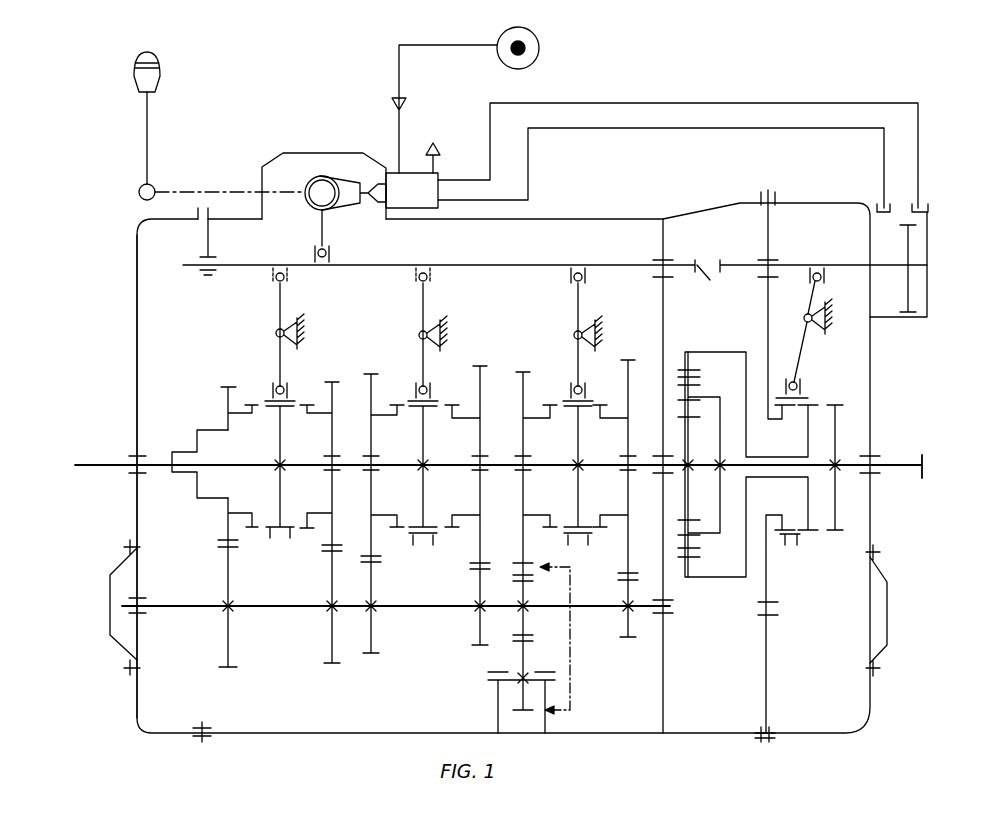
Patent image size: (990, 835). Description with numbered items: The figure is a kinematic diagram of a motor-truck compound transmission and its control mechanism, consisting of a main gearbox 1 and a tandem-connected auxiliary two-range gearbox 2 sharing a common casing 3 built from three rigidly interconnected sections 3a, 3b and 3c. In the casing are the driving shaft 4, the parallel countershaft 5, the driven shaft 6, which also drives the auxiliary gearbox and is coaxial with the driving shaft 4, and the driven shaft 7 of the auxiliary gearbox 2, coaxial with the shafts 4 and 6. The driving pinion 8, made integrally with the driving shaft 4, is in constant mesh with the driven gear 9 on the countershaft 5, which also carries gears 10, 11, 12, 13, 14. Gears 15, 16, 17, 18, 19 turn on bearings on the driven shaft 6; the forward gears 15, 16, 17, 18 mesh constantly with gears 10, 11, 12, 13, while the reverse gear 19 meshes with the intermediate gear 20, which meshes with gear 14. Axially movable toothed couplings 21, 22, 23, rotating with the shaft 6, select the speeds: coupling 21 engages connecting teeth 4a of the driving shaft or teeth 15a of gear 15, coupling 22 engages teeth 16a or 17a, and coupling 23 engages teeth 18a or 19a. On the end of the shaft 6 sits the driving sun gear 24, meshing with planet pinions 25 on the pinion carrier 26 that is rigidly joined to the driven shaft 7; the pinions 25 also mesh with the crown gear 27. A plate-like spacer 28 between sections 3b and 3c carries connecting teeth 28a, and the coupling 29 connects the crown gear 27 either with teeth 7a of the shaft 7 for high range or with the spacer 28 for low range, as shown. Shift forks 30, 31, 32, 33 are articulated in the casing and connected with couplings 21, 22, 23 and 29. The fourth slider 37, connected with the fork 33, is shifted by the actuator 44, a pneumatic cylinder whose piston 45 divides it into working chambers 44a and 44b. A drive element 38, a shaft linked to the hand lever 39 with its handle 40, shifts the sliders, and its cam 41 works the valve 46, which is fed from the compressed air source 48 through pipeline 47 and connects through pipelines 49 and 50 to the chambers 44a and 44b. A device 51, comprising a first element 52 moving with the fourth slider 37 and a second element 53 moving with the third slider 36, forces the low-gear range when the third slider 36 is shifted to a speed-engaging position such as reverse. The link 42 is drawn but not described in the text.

The main gearbox 1 is at (157, 312).
The auxiliary two-range gearbox 2 is at (838, 575).
The casing 3 is at (337, 736).
The casing section 3a is at (137, 704).
The casing section 3b is at (250, 734).
The casing section 3c is at (803, 737).
The driving shaft 4 is at (90, 466).
The connecting teeth 4a is at (238, 536).
The countershaft 5 is at (285, 608).
The driven shaft 6 is at (228, 468).
The driven shaft 7 is at (882, 468).
The connecting teeth 7a is at (838, 402).
The driving pinion 8 is at (226, 523).
The driven gear 9 is at (226, 627).
The gear 10 is at (329, 627).
The gear 11 is at (373, 632).
The gear 12 is at (478, 625).
The gear 13 is at (625, 618).
The gear 14 is at (524, 622).
The gear 15 is at (332, 379).
The connecting teeth 15a is at (312, 551).
The gear 16 is at (371, 374).
The connecting teeth 16a is at (389, 550).
The gear 17 is at (480, 364).
The connecting teeth 17a is at (459, 553).
The gear 18 is at (630, 358).
The connecting teeth 18a is at (613, 559).
The gear 19 is at (522, 366).
The connecting teeth 19a is at (540, 559).
The intermediate gear 20 is at (516, 695).
The gearshift toothed coupling 21 is at (272, 396).
The gearshift toothed coupling 22 is at (430, 392).
The gearshift toothed coupling 23 is at (568, 393).
The driving sun gear 24 is at (692, 437).
The planet pinions 25 is at (698, 376).
The pinion carrier 26 is at (718, 497).
The crown gear 27 is at (690, 362).
The spacer 28 is at (766, 320).
The connecting teeth 28a is at (791, 436).
The toothed gearshift coupling 29 is at (803, 388).
The shift fork 30 is at (279, 300).
The shift fork 31 is at (421, 302).
The shift fork 32 is at (580, 312).
The shift fork 33 is at (804, 352).
The third slider 36 is at (505, 265).
The fourth slider 37 is at (802, 266).
The drive element 38 is at (322, 176).
The hand lever 39 is at (149, 134).
The handle 40 is at (160, 78).
The cam 41 is at (347, 200).
The link 42 is at (321, 226).
The actuator 44 is at (930, 269).
The working chamber 44a is at (920, 290).
The working chamber 44b is at (890, 318).
The piston 45 is at (920, 244).
The valve 46 is at (417, 200).
The pipeline 47 is at (402, 80).
The compressed air source 48 is at (535, 56).
The pipeline 49 is at (676, 103).
The pipeline 50 is at (620, 130).
The device 51 is at (702, 253).
The first element 52 is at (722, 263).
The second element 53 is at (710, 283).